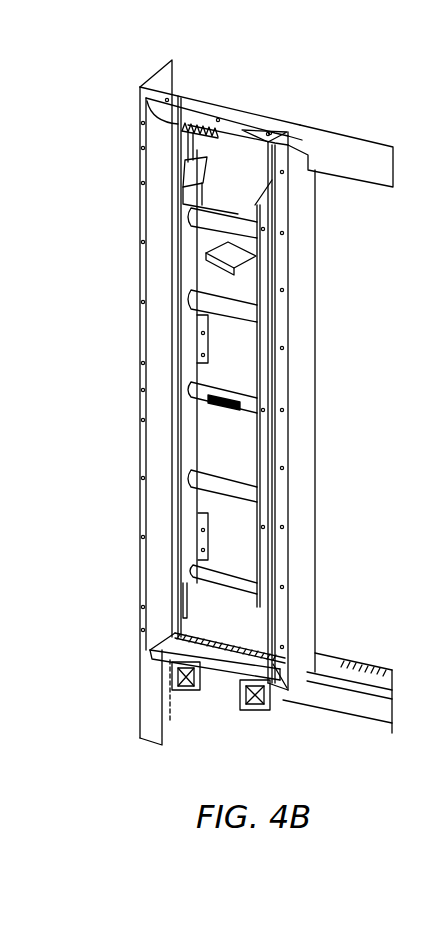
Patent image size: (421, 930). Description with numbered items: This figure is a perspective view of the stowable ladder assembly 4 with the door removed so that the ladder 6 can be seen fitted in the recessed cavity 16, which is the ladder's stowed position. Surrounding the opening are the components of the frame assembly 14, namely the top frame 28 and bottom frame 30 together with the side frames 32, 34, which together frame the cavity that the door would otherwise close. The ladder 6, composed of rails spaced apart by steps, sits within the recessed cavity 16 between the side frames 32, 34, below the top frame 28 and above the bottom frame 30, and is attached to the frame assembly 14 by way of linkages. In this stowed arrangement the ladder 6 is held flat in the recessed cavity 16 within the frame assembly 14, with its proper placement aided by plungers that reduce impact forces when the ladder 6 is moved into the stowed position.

The stowable ladder assembly 4 is at (346, 80).
The frame assembly 14 is at (104, 182).
The recessed cavity 16 is at (228, 165).
The top frame 28 is at (370, 160).
The side frame 34 is at (302, 455).
The ladder 6 is at (190, 440).
The side frame 32 is at (142, 690).
The bottom frame 30 is at (298, 690).